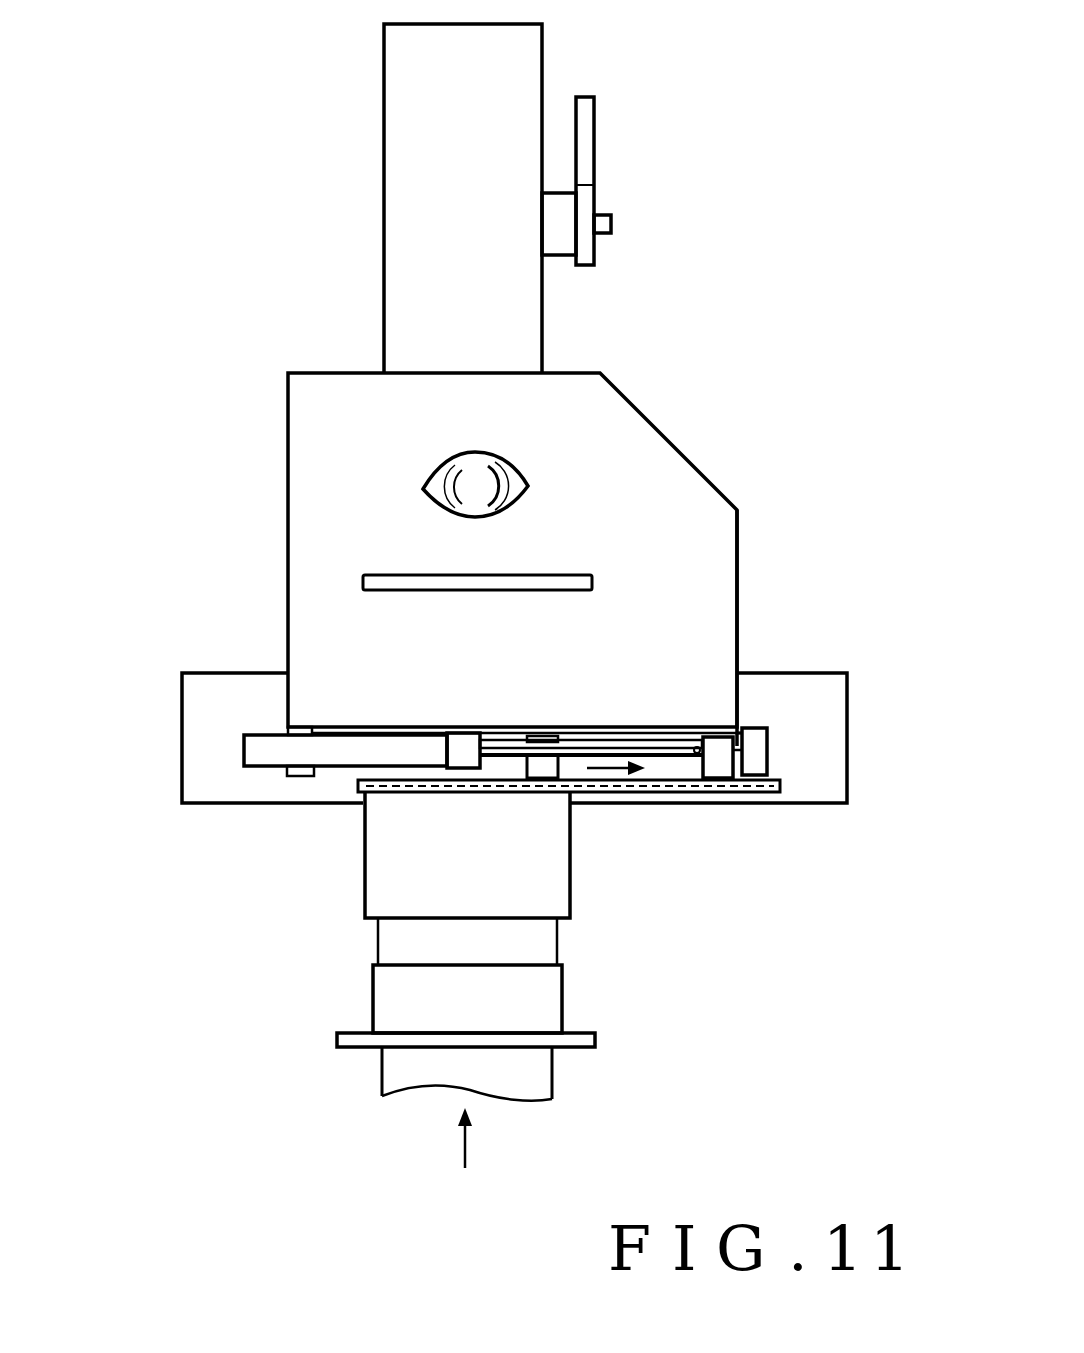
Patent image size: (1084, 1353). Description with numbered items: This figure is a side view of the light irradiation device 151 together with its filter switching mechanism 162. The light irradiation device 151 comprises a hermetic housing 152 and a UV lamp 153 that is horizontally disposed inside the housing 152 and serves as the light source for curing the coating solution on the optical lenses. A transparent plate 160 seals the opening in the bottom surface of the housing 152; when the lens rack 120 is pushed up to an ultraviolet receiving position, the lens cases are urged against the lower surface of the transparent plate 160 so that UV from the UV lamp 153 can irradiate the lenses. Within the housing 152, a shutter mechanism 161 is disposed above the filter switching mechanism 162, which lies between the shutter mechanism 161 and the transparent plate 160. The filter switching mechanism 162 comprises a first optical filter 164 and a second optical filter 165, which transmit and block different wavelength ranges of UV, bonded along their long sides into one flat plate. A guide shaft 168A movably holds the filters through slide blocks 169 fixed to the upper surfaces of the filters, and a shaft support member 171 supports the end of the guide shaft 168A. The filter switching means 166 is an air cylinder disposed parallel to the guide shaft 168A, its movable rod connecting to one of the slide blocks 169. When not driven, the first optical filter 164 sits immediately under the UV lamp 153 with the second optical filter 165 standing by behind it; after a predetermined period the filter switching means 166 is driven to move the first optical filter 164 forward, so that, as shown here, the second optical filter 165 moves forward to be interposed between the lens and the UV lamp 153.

The light irradiation device 151 is at (734, 464).
The hermetic housing 152 is at (737, 555).
The UV lamp 153 is at (423, 490).
The shutter mechanism 161 is at (348, 583).
The filter switching mechanism 162 is at (828, 737).
The filter switching means 166 is at (208, 740).
The guide shaft 168A is at (613, 737).
The slide blocks 169 is at (545, 727).
The shaft support member 171 is at (757, 760).
The first optical filter 164 is at (652, 795).
The second optical filter 165 is at (405, 793).
The transparent plate 160 is at (597, 1040).
The lens rack 120 is at (363, 1070).